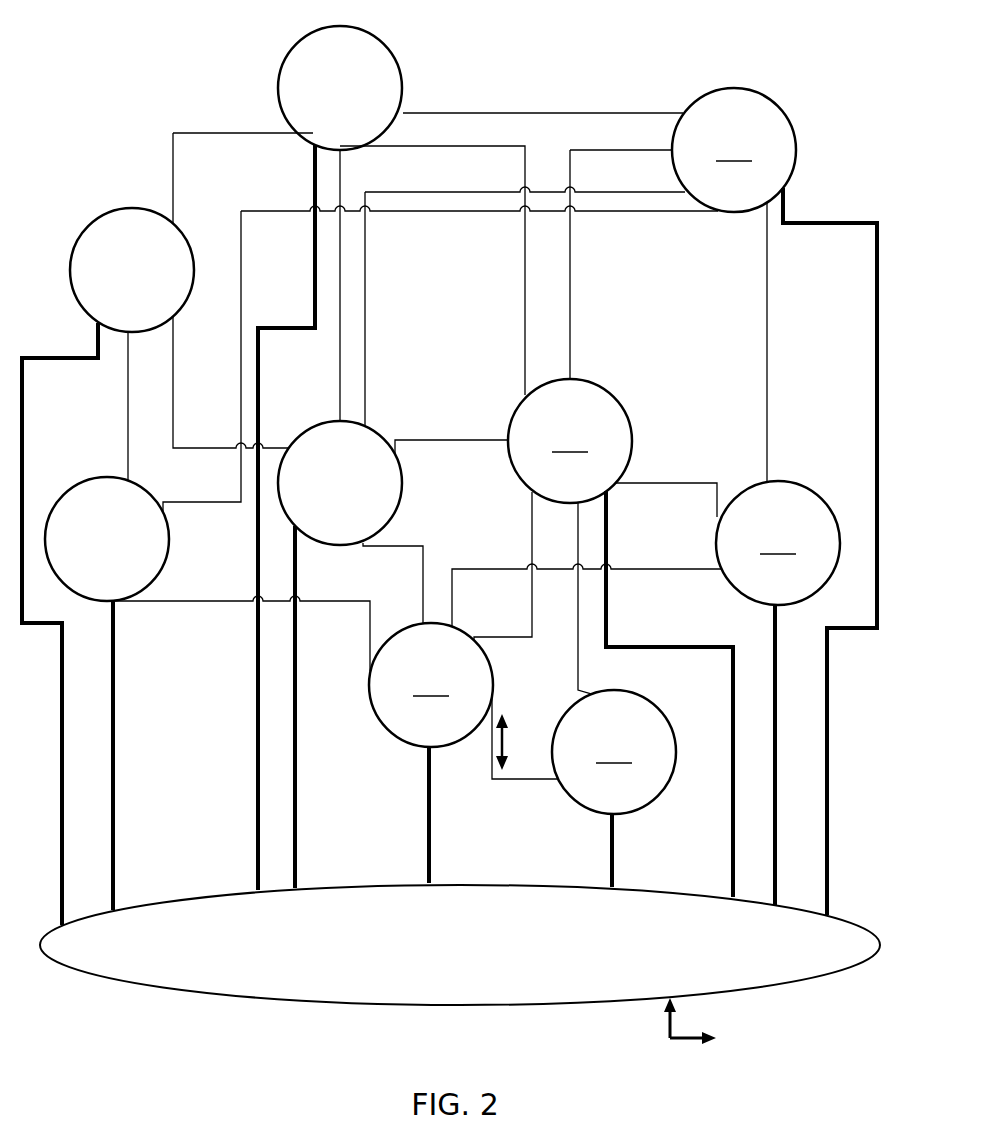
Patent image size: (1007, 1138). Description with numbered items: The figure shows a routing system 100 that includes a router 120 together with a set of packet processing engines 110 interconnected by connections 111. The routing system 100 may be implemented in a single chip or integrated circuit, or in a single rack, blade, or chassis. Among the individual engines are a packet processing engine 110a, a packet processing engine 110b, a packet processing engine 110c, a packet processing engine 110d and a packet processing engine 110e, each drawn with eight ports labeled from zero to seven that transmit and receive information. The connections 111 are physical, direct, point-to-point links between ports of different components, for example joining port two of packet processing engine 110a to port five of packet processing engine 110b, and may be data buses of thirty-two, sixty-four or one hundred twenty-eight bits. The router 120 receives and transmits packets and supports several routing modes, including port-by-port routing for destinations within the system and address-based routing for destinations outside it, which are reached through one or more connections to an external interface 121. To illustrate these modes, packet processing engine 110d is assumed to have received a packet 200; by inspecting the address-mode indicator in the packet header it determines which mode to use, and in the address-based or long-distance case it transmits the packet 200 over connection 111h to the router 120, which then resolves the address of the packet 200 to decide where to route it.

The routing system 100 is at (160, 56).
The packet processing engine 110 is at (322, 99).
The packet processing engine 110a is at (621, 404).
The packet processing engine 110b is at (829, 498).
The packet processing engine 110c is at (371, 706).
The packet processing engine 110d is at (677, 780).
The packet processing engine 110e is at (779, 108).
The connection 111 is at (571, 297).
The connection 111h is at (610, 880).
The router 120 is at (441, 957).
The external interface 121 is at (665, 1028).
The packet 200 is at (523, 780).